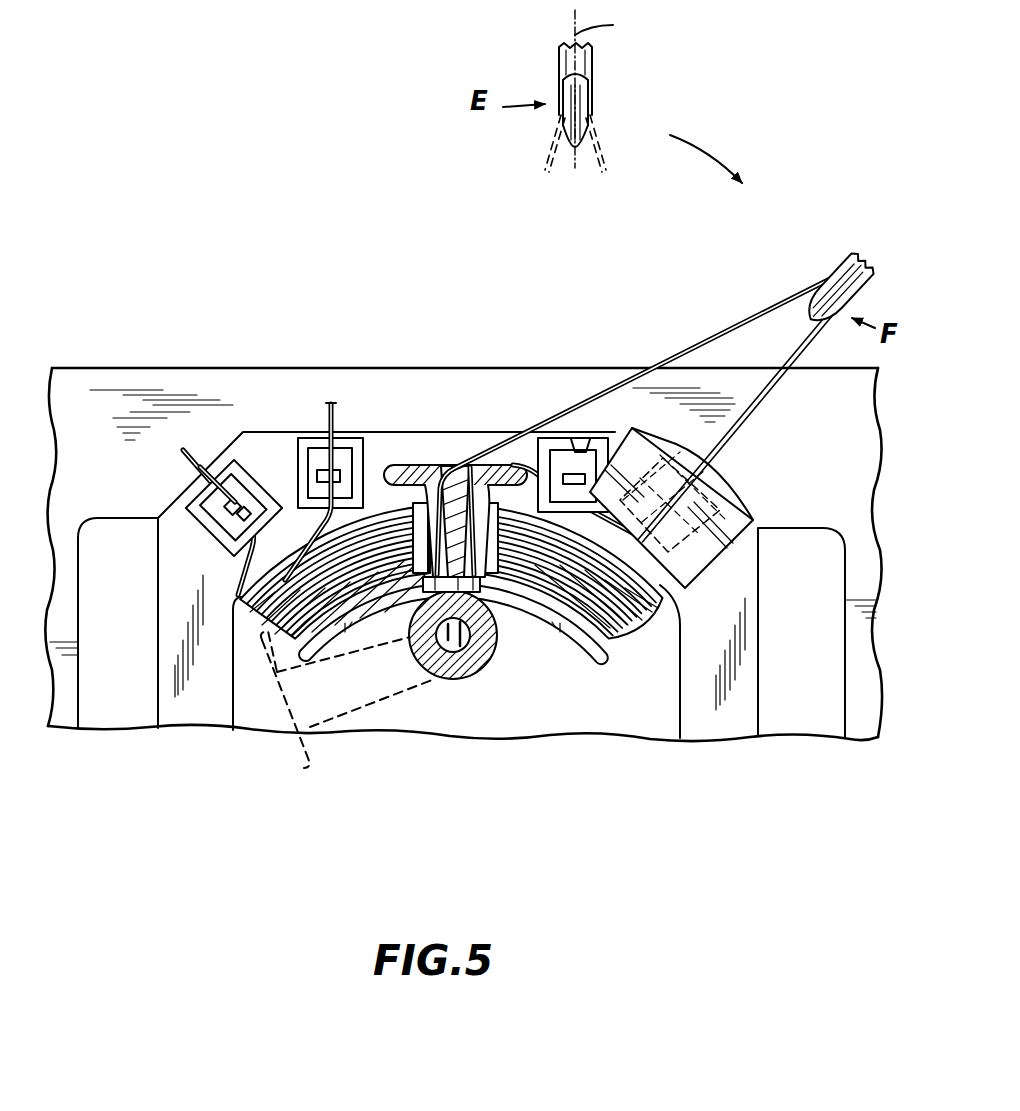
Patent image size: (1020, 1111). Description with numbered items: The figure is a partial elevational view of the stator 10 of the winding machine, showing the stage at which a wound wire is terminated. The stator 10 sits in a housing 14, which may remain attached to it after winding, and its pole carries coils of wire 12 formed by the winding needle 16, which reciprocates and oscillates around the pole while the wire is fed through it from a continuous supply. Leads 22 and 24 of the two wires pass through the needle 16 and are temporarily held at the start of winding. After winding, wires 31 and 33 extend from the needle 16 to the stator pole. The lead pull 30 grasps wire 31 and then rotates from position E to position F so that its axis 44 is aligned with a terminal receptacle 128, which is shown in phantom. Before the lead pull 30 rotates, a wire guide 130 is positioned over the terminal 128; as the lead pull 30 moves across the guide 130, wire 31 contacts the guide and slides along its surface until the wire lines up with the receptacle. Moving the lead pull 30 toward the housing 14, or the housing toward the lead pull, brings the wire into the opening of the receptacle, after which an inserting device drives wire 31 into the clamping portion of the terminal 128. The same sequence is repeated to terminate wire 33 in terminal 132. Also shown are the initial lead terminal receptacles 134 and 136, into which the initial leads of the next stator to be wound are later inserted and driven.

The stator 10 is at (590, 652).
The coils of wire 12 is at (644, 635).
The housing 14 is at (186, 386).
The winding needle 16 is at (396, 465).
The lead 22 is at (182, 457).
The lead 24 is at (338, 410).
The lead pull 30 is at (833, 278).
The wire 31 is at (688, 350).
The wire 33 is at (515, 422).
The axis 44 is at (613, 33).
The terminal receptacle 128 is at (695, 500).
The wire guide 130 is at (760, 527).
The terminal 132 is at (590, 452).
The initial lead terminal receptacle 134 is at (227, 463).
The initial lead terminal receptacle 136 is at (300, 440).